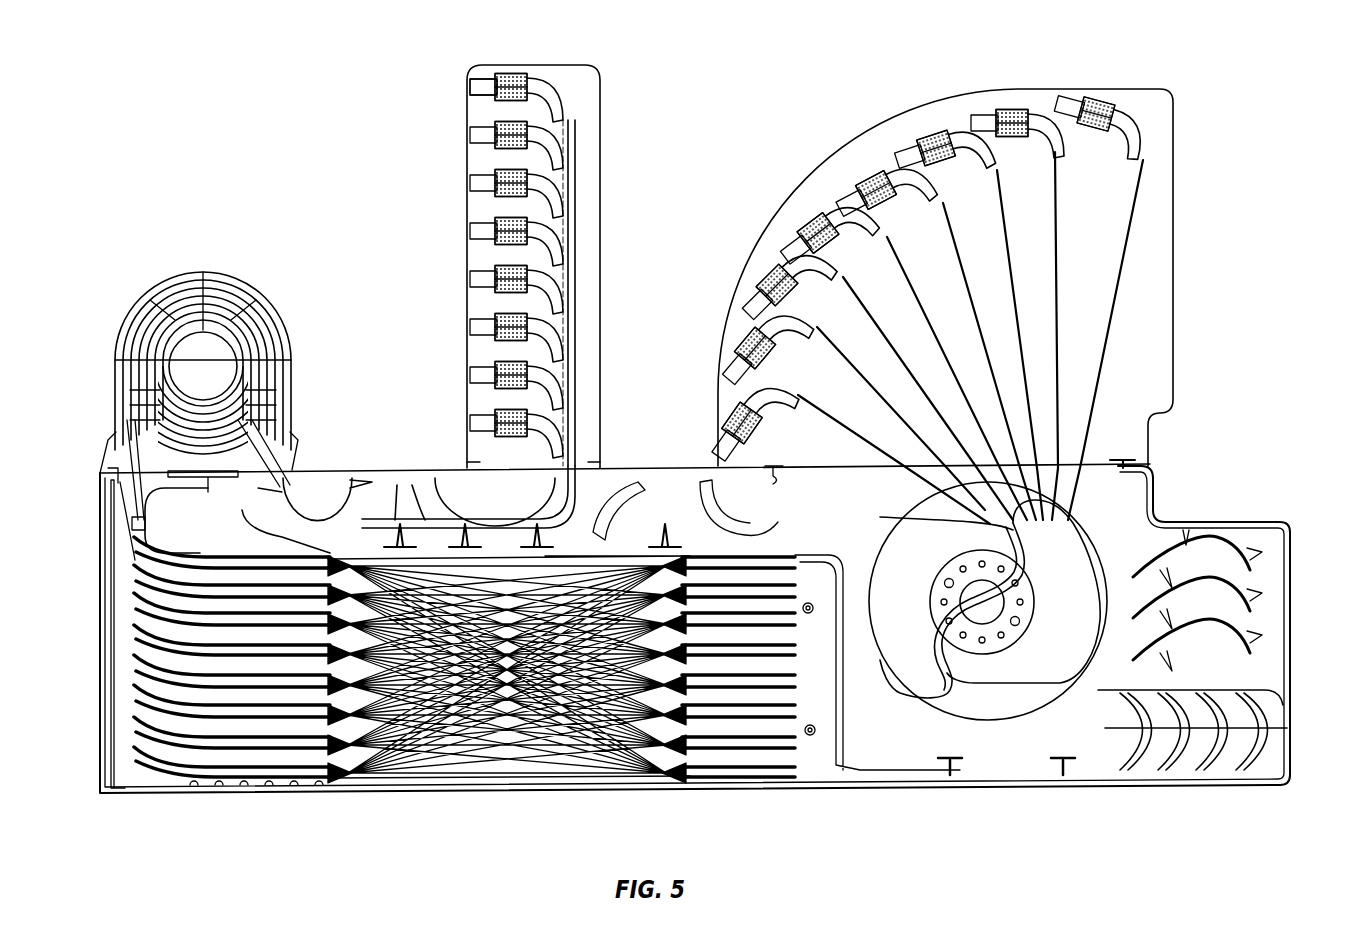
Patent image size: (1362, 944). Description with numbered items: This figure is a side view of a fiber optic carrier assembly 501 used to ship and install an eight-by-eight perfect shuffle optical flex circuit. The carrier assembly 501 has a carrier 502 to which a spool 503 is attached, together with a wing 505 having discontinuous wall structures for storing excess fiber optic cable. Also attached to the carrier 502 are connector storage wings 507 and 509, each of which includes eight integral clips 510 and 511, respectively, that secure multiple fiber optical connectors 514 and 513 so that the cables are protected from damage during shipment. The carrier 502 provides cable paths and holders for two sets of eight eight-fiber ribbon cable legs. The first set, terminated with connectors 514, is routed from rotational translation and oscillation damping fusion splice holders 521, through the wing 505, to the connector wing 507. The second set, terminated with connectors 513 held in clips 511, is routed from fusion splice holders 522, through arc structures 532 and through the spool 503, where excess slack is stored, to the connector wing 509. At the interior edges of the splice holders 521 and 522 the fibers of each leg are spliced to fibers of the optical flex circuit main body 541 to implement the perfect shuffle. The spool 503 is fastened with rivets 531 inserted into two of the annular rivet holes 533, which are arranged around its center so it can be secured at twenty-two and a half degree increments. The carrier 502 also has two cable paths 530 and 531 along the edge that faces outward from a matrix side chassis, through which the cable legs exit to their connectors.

The carrier assembly 501 is at (339, 134).
The carrier 502 is at (1290, 530).
The spool 503 is at (1090, 535).
The wing 505 is at (185, 272).
The connector storage wing 507 is at (604, 105).
The connector storage wing 509 is at (1045, 92).
The integral clip 510 is at (530, 72).
The integral clip 511 is at (932, 135).
The multiple fiber optical connector 513 is at (905, 140).
The multiple fiber optical connector 514 is at (485, 76).
The fusion splice holder 521 is at (240, 782).
The fusion splice holder 522 is at (735, 765).
The cable path 530 is at (384, 441).
The cable path 531 is at (630, 468).
The arc structure 532 is at (1160, 775).
The annular rivet hole 533 is at (1000, 635).
The optical flex circuit main body 541 is at (495, 777).